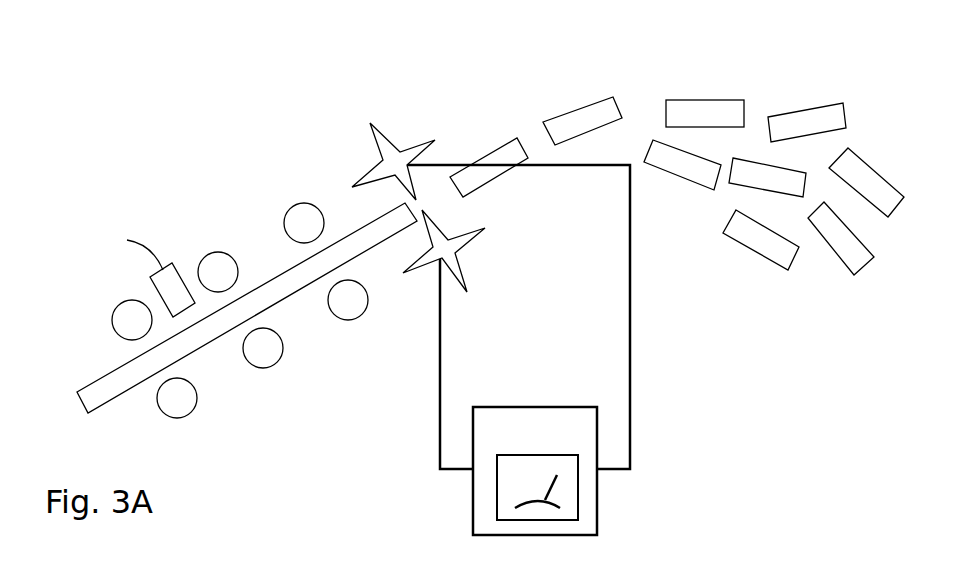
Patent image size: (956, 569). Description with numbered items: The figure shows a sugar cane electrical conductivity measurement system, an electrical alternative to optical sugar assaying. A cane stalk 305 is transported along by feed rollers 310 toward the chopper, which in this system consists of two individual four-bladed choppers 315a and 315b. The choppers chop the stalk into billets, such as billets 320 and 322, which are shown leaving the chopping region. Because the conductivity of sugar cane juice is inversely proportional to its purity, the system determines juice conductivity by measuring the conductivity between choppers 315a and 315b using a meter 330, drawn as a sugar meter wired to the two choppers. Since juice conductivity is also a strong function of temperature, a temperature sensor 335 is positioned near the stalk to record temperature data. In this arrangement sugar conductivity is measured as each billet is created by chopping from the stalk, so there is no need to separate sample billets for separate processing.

The cane stalk 305 is at (82, 380).
The feed rollers 310 is at (282, 208).
The four-bladed chopper 315a is at (385, 130).
The four-bladed chopper 315b is at (468, 248).
The billet 320 is at (582, 102).
The billet 322 is at (808, 107).
The meter 330 is at (602, 513).
The temperature sensor 335 is at (163, 262).